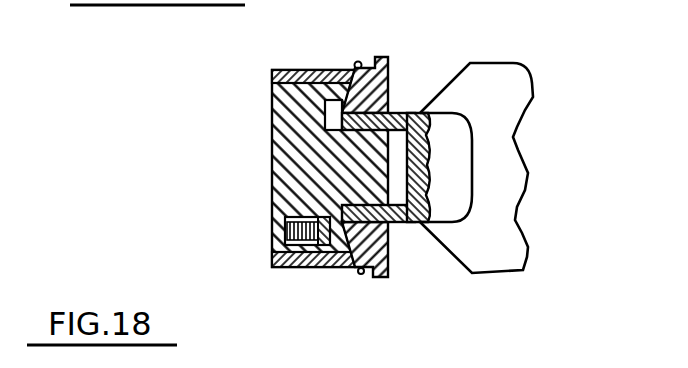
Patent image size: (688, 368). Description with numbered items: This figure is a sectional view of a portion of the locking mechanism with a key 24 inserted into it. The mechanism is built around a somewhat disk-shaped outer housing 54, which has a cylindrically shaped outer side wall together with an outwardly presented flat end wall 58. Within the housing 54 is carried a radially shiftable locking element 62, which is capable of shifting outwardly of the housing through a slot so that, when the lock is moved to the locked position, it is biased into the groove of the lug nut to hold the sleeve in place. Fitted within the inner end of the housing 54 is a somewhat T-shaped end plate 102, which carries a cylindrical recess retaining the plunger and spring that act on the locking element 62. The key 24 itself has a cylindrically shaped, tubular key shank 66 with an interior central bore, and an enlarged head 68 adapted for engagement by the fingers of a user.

The key 24 is at (428, 60).
The outer housing 54 is at (340, 58).
The outwardly presented flat end wall 58 is at (360, 275).
The locking element 62 is at (340, 100).
The key shank 66 is at (405, 225).
The enlarged head 68 is at (497, 95).
The end plate 102 is at (302, 152).